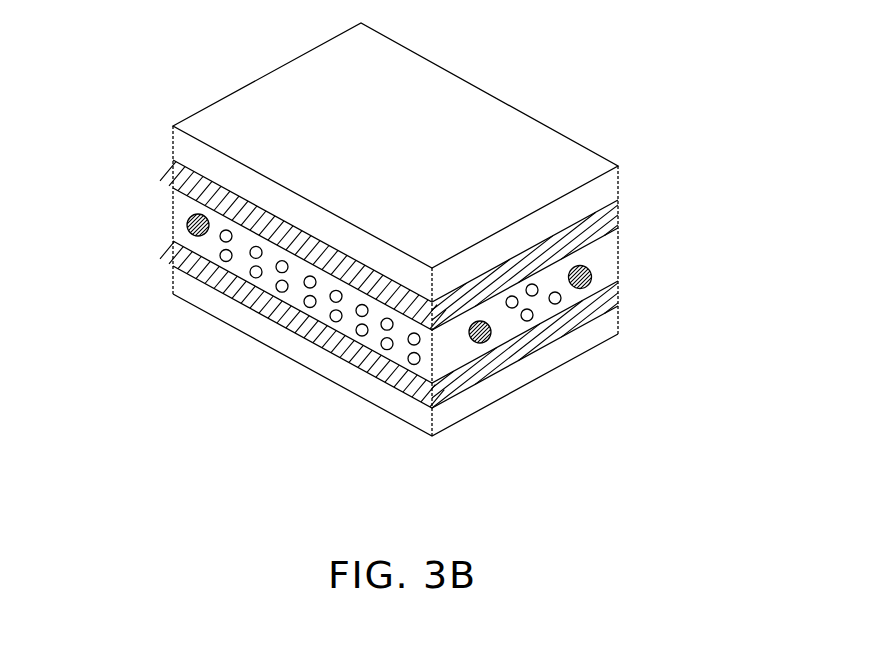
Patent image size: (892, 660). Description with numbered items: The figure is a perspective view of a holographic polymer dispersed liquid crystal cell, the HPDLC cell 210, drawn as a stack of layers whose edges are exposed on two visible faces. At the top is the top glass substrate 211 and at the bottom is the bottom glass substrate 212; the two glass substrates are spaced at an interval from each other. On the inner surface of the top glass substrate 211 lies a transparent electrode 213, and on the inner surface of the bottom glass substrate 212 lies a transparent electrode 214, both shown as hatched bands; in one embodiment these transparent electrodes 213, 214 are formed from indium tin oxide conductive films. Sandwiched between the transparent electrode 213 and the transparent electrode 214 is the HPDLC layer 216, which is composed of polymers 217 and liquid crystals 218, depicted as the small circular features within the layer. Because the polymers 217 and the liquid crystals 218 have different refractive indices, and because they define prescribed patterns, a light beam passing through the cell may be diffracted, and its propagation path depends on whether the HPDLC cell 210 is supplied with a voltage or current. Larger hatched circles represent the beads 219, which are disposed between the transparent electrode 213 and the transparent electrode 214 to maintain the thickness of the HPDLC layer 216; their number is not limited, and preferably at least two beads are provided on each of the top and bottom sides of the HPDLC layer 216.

The HPDLC cell 210 is at (196, 39).
The top glass substrate 211 is at (618, 175).
The bottom glass substrate 212 is at (495, 387).
The transparent electrode 213 is at (618, 212).
The transparent electrode 214 is at (538, 343).
The HPDLC layer 216 is at (625, 258).
The polymers 217 is at (605, 278).
The liquid crystals 218 is at (356, 329).
The beads 219 is at (186, 222).